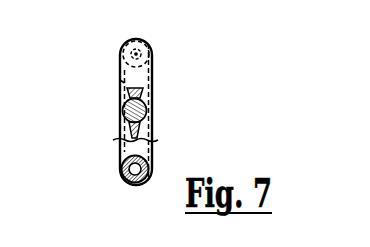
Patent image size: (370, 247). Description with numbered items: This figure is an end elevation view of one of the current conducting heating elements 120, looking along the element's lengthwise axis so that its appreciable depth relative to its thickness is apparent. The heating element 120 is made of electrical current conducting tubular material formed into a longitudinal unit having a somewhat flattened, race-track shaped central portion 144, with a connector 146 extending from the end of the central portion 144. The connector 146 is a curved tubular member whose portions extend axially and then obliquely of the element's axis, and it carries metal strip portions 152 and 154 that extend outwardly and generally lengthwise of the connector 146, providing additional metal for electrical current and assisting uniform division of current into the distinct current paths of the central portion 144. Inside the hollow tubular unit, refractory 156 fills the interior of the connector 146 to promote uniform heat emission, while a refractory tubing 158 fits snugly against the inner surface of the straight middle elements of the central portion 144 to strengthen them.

The heating element 120 is at (159, 42).
The central portion 144 is at (116, 71).
The metal strip portion 152 is at (121, 80).
The connector 146 is at (127, 92).
The refractory 156 is at (148, 116).
The metal strip portion 154 is at (148, 132).
The refractory tubing 158 is at (122, 169).